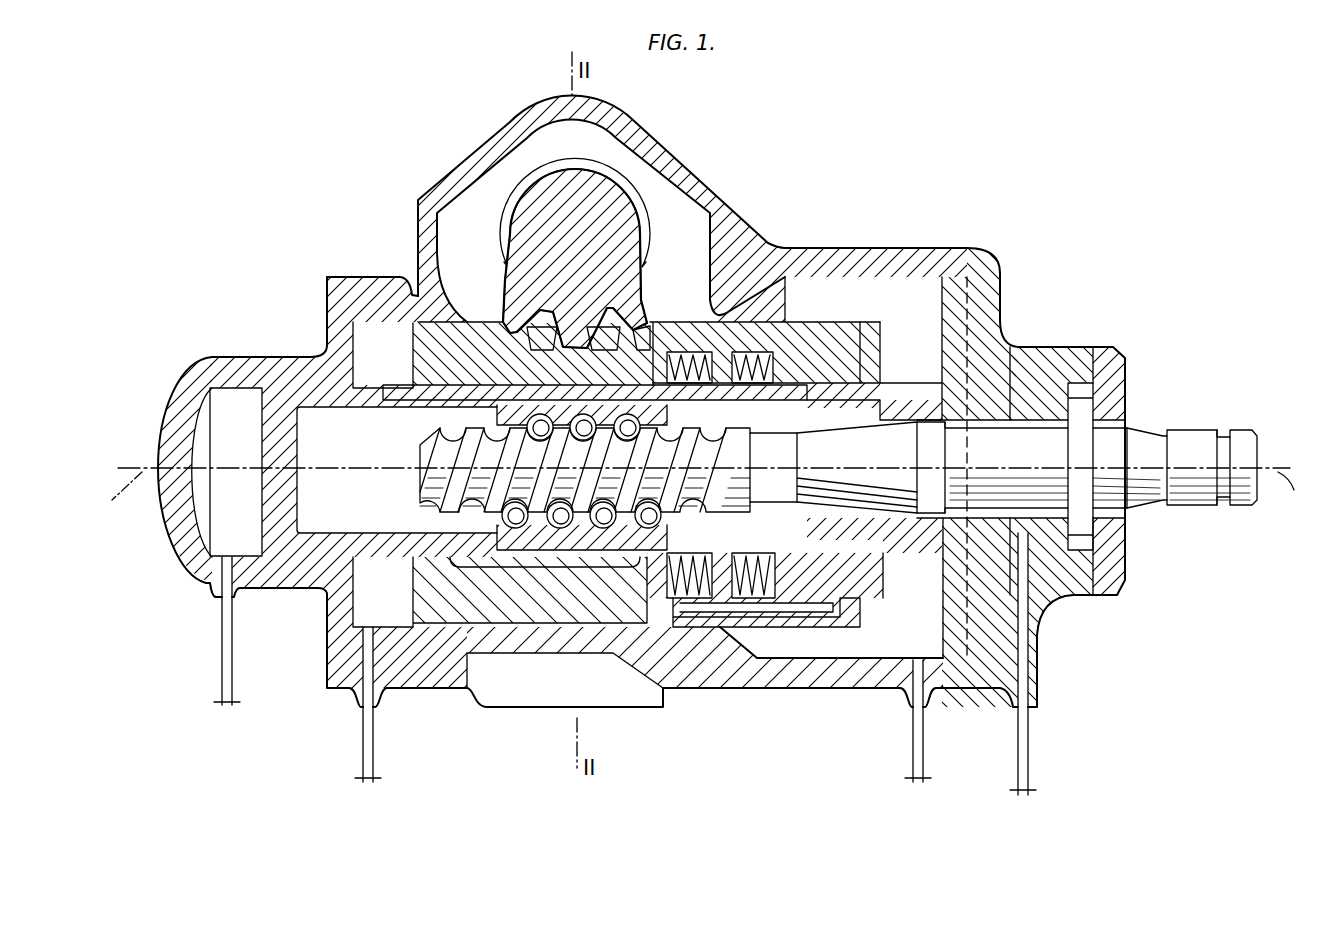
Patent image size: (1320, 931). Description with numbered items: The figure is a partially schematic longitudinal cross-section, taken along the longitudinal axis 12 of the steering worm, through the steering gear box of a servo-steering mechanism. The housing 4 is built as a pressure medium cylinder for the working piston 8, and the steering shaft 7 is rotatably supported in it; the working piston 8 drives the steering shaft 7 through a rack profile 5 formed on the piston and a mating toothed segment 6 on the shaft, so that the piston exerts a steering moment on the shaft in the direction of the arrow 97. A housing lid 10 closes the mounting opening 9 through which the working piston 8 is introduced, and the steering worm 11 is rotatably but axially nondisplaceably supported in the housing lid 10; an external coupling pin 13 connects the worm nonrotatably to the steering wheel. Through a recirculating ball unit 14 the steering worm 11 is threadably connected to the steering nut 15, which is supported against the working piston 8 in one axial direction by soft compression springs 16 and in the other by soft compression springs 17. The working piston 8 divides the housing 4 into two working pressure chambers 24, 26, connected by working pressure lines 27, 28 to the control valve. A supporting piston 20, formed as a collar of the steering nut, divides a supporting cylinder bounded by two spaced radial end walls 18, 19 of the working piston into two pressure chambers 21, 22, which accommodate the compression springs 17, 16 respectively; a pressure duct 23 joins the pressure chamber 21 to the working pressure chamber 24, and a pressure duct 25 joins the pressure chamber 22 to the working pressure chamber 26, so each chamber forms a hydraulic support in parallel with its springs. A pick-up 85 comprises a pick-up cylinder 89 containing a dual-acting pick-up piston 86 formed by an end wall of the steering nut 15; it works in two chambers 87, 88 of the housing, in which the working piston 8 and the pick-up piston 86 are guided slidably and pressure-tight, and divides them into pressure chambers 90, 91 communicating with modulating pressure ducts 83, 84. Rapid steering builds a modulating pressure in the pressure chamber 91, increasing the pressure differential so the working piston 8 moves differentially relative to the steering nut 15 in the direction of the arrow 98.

The housing 4 is at (862, 240).
The rack profile 5 is at (614, 325).
The toothed segment 6 is at (512, 298).
The steering shaft 7 is at (634, 158).
The working piston 8 is at (425, 357).
The mounting opening 9 is at (1004, 276).
The housing lid 10 is at (1101, 616).
The steering worm 11 is at (480, 500).
The longitudinal axis 12 is at (699, 490).
The external coupling pin 13 is at (1184, 438).
The recirculating ball unit 14 is at (600, 526).
The steering nut 15 is at (407, 557).
The compression springs 16 is at (670, 350).
The compression springs 17 is at (745, 350).
The radial end wall 18 is at (786, 598).
The radial end wall 19 is at (670, 600).
The supporting piston 20 is at (724, 600).
The pressure chamber 21 is at (757, 568).
The pressure chamber 22 is at (697, 386).
The pressure duct 23 is at (397, 402).
The working pressure chamber 24 is at (383, 343).
The pressure duct 25 is at (832, 622).
The working pressure chamber 26 is at (908, 284).
The working pressure line 27 is at (374, 738).
The working pressure line 28 is at (923, 753).
The modulating pressure duct 83 is at (1030, 738).
The modulating pressure duct 84 is at (233, 676).
The pick-up 85 is at (252, 408).
The pick-up piston 86 is at (290, 496).
The chamber 87 is at (898, 390).
The chamber 88 is at (262, 590).
The pick-up cylinder 89 is at (278, 338).
The pressure chamber 90 is at (906, 412).
The pressure chamber 91 is at (246, 463).
The arrow 97 is at (606, 200).
The arrow 98 is at (950, 592).